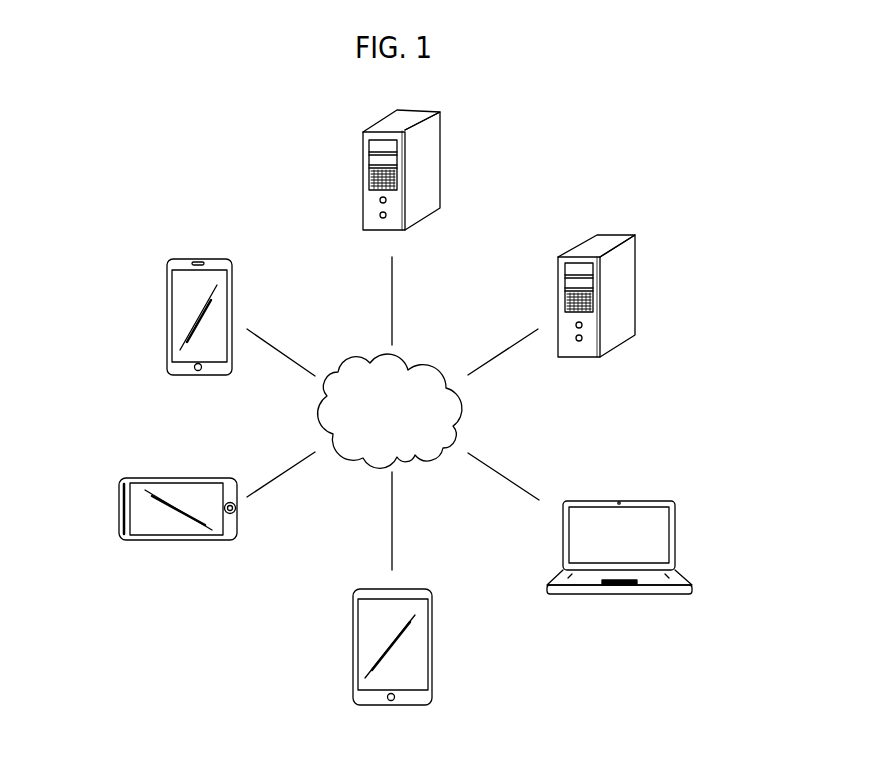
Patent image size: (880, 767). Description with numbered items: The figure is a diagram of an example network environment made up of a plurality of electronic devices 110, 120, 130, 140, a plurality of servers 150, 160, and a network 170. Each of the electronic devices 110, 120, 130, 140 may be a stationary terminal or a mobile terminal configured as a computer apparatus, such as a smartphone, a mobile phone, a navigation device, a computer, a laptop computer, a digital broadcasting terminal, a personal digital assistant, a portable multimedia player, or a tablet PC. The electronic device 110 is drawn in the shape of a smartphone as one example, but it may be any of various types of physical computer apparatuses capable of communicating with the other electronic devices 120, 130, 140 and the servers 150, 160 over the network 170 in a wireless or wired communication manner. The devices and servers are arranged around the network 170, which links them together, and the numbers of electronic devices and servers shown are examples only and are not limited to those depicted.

The electronic device 110 is at (163, 318).
The electronic device 120 is at (117, 507).
The electronic device 130 is at (433, 646).
The electronic device 140 is at (677, 537).
The server 150 is at (635, 284).
The server 160 is at (440, 158).
The network 170 is at (415, 368).